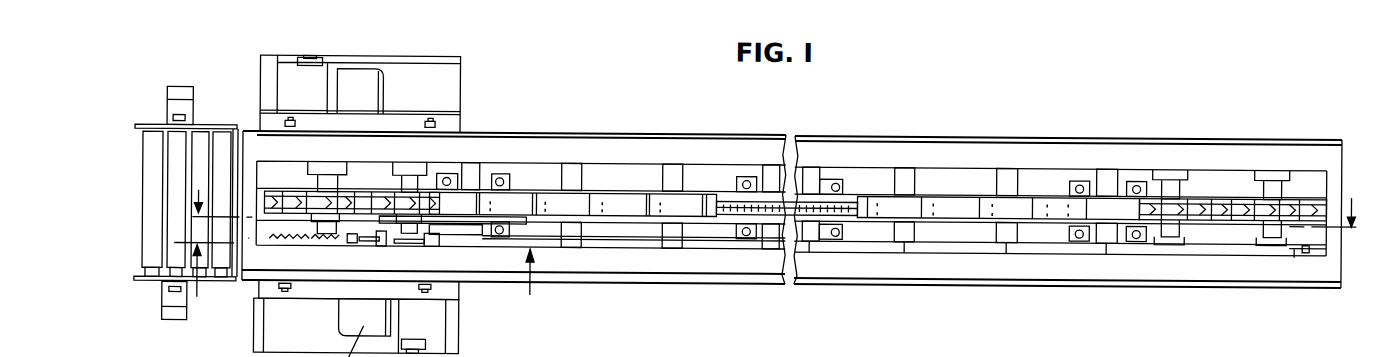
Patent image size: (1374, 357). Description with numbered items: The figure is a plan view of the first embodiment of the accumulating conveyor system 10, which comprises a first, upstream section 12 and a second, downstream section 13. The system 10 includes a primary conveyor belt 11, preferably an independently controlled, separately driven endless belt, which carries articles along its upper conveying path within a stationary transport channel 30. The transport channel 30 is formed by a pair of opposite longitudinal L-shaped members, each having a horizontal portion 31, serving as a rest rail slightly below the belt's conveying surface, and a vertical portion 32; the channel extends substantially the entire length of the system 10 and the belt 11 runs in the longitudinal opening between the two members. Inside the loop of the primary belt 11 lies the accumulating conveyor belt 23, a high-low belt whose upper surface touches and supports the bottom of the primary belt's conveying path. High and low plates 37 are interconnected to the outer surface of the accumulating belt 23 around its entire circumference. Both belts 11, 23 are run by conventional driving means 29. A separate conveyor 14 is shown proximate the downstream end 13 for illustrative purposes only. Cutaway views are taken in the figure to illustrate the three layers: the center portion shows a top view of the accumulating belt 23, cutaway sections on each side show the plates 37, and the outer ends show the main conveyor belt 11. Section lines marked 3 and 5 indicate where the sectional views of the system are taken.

The accumulating conveyor system 10 is at (792, 202).
The primary conveyor belt 11 is at (345, 200).
The upstream section 12 is at (1155, 158).
The downstream section 13 is at (467, 150).
The separate conveyor 14 is at (219, 137).
The accumulating conveyor belt 23 is at (825, 205).
The driving means 29 is at (358, 85).
The transport channel 30 is at (652, 153).
The horizontal portion 31 is at (590, 150).
The vertical portion 32 is at (717, 131).
The plates 37 is at (890, 205).
The section line 3- 3 is at (356, 285).
The section line 5- 5 is at (774, 196).